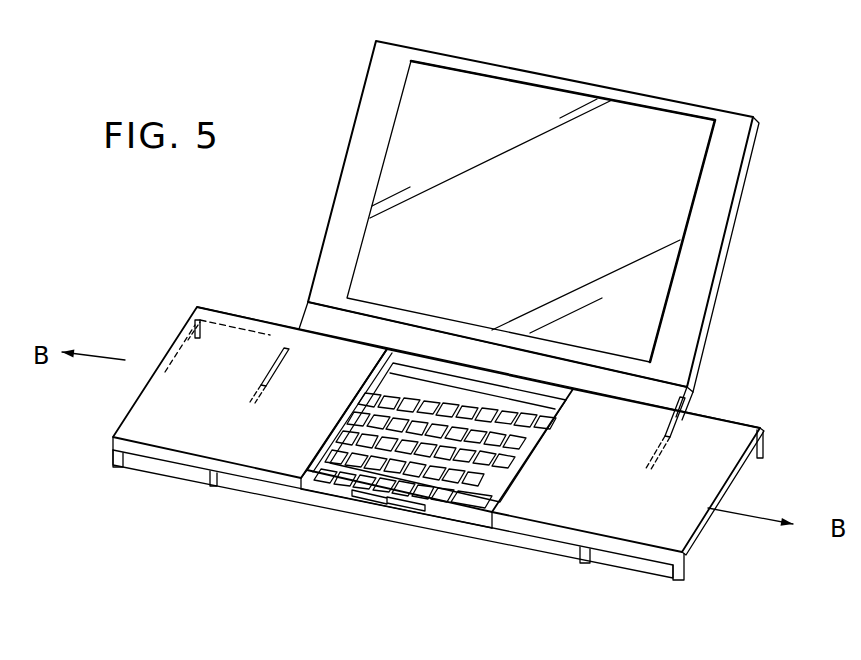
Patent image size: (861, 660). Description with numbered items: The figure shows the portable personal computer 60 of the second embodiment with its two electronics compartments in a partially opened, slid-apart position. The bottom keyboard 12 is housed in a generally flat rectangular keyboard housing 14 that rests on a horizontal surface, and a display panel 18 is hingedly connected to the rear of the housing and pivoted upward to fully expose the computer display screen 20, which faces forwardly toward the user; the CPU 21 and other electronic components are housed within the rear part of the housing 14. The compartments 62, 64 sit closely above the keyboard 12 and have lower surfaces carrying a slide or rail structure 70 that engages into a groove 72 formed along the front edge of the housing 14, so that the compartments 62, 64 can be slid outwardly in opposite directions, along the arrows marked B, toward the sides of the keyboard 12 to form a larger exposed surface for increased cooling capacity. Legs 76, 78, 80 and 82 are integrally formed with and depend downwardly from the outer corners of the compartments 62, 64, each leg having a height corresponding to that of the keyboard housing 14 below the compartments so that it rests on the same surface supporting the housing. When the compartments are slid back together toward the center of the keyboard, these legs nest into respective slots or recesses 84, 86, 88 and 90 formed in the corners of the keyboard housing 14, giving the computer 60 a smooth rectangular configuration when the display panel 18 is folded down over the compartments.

The computer 60 is at (676, 78).
The display panel 18 is at (745, 195).
The computer display screen 20 is at (530, 230).
The CPU 21 is at (512, 358).
The leg 76 is at (213, 318).
The slot or recess 84 is at (281, 342).
The compartment 62 is at (162, 412).
The slot or recess 88 is at (670, 440).
The leg 80 is at (765, 448).
The leg 78 is at (118, 468).
The slot or recess 86 is at (212, 486).
The keyboard 12 is at (362, 472).
The slide or rail structure 70 is at (362, 512).
The groove 72 is at (438, 518).
The keyboard housing 14 is at (505, 548).
The slot or recess 90 is at (585, 566).
The compartment 64 is at (673, 515).
The leg 82 is at (685, 584).